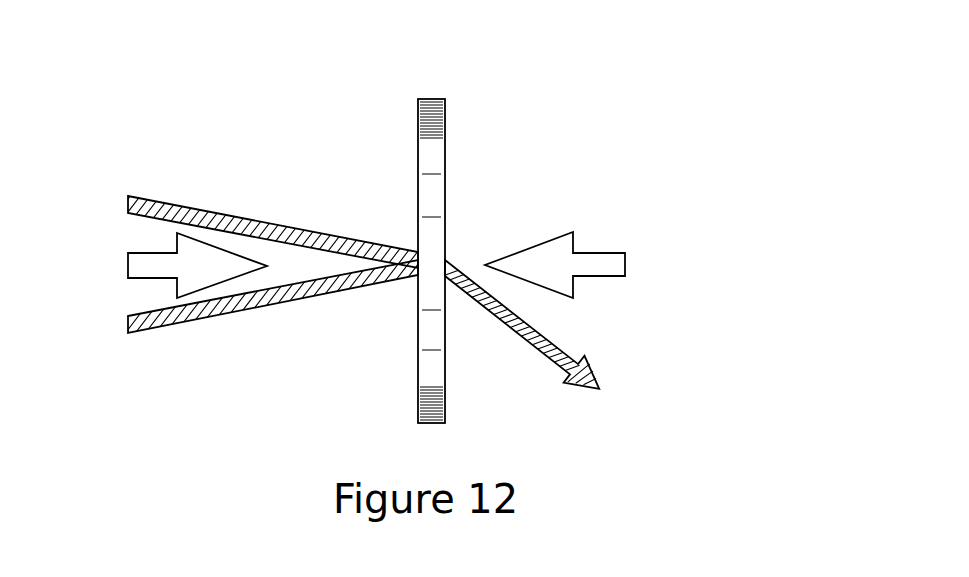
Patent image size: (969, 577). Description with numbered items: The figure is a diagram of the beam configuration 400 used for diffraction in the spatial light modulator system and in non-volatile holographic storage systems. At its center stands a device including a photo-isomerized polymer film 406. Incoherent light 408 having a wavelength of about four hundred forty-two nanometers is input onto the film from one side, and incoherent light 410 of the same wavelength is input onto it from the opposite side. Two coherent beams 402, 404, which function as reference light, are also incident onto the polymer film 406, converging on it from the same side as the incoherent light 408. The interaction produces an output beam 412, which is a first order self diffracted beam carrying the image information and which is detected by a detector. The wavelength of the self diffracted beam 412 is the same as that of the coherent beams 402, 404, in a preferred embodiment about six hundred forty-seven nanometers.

The diffraction system 400 is at (610, 76).
The first 647 nm beam 402 is at (200, 210).
The second 647 nm beam 404 is at (198, 320).
The holographic recording medium / plate 406 is at (445, 141).
The 442 nm beam (left) 408 is at (143, 252).
The 442 nm beam (right) 410 is at (685, 287).
The 647 nm diffracted beam 412 is at (692, 426).